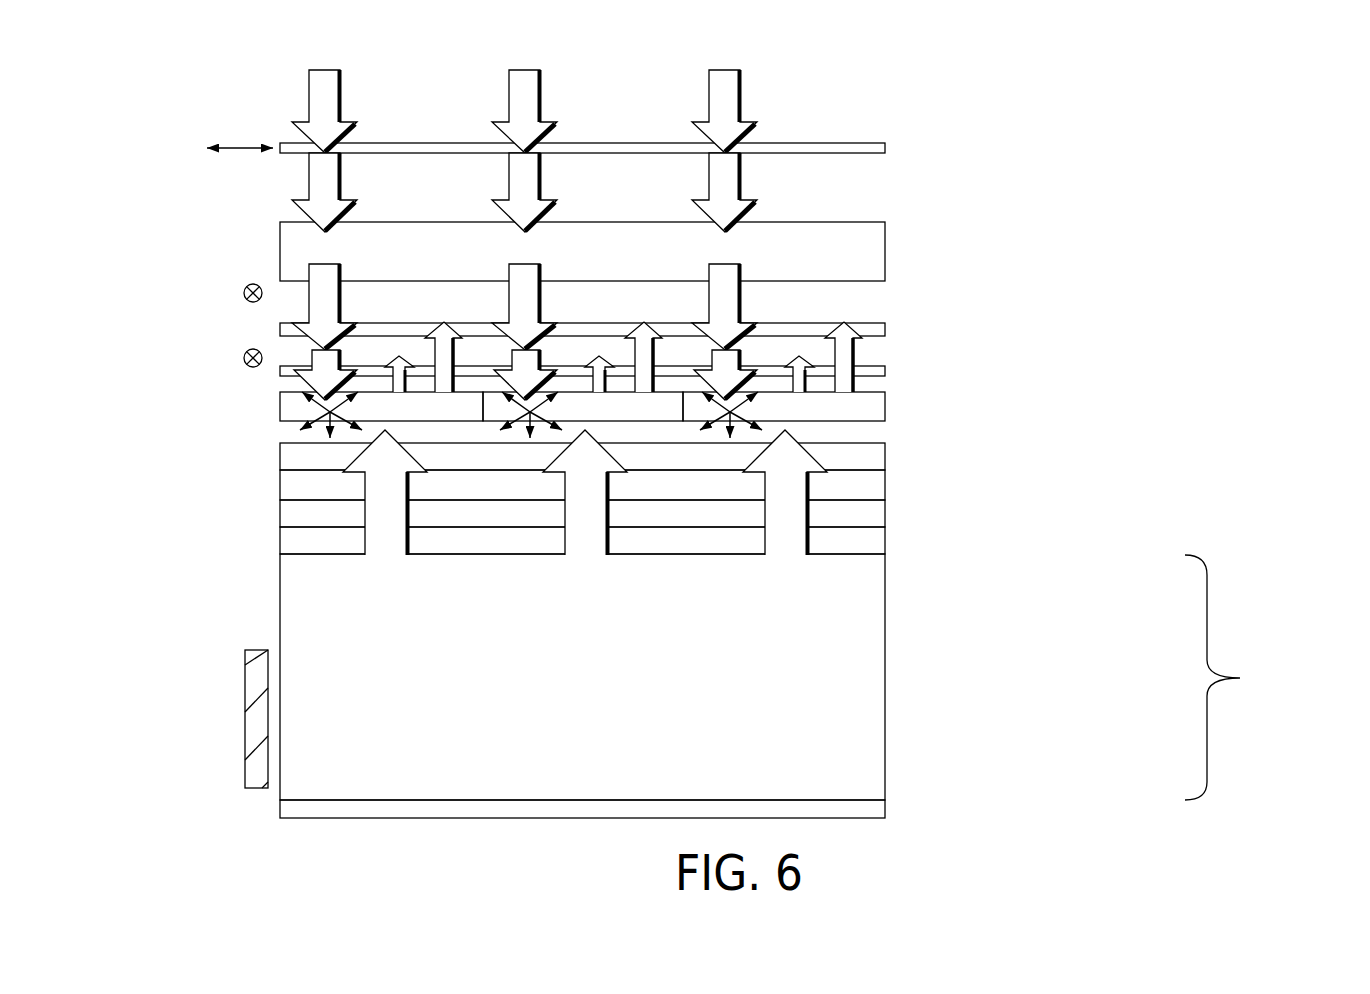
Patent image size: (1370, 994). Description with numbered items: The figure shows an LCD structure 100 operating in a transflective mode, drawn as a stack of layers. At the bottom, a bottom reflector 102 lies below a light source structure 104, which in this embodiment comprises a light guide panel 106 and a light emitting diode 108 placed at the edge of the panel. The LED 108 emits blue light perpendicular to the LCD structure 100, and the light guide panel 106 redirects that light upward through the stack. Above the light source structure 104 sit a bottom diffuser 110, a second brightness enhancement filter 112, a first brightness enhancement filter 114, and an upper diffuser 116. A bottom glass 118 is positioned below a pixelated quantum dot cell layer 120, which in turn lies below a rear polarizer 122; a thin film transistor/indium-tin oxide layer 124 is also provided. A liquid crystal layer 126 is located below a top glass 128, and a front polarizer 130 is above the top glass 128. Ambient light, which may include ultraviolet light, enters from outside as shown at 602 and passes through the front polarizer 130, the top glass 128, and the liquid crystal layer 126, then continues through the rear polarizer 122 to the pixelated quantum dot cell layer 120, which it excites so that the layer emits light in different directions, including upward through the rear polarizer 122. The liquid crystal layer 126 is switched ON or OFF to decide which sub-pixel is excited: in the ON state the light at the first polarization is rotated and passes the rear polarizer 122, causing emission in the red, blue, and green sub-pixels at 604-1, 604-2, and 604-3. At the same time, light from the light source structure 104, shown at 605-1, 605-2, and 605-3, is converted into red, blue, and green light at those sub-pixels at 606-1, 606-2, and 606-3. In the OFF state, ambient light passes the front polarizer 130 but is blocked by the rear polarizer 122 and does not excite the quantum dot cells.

The LCD structure 100 is at (1282, 96).
The bottom reflector 102 is at (885, 808).
The light source structure 104 is at (1240, 678).
The light guide panel 106 is at (885, 697).
The light emitting diode (LED) 108 is at (245, 719).
The bottom diffuser 110 is at (885, 543).
The second brightness enhancement filter (BEF2) 112 is at (885, 516).
The first brightness enhancement filter (BEF1) 114 is at (885, 489).
The upper diffuser 116 is at (885, 459).
The bottom glass 118 is at (884, 356).
The pixelated quantum dot cell layer 120 is at (885, 420).
The rear polarizer 122 is at (885, 370).
The thin film transistor (TFT)/indium-tin oxide (ITO) layer 124 is at (885, 328).
The liquid crystal layer 126 is at (885, 250).
The top glass 128 is at (883, 203).
The front polarizer 130 is at (885, 148).
The ambient light 602 is at (309, 97).
The light emitted at red sub-pixel 604-1 is at (399, 356).
The light emitted at blue sub-pixel 604-2 is at (599, 356).
The light emitted at green sub-pixel 604-3 is at (799, 356).
The light from light source structure 605-1 is at (388, 555).
The light from light source structure 605-2 is at (588, 555).
The light from light source structure 605-3 is at (788, 555).
The converted red light 606-1 is at (445, 322).
The converted blue light 606-2 is at (645, 322).
The converted green light 606-3 is at (845, 322).